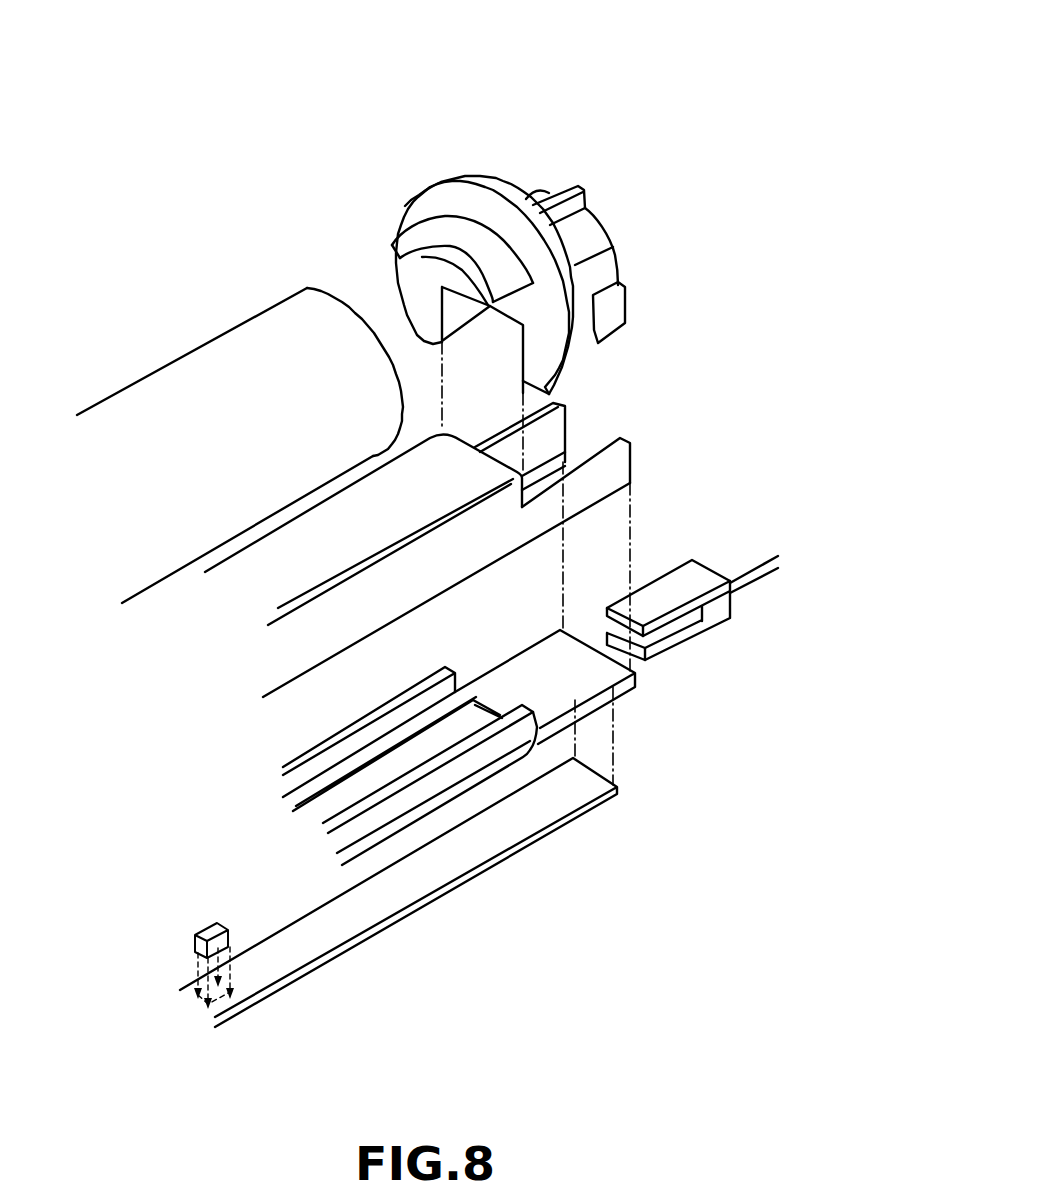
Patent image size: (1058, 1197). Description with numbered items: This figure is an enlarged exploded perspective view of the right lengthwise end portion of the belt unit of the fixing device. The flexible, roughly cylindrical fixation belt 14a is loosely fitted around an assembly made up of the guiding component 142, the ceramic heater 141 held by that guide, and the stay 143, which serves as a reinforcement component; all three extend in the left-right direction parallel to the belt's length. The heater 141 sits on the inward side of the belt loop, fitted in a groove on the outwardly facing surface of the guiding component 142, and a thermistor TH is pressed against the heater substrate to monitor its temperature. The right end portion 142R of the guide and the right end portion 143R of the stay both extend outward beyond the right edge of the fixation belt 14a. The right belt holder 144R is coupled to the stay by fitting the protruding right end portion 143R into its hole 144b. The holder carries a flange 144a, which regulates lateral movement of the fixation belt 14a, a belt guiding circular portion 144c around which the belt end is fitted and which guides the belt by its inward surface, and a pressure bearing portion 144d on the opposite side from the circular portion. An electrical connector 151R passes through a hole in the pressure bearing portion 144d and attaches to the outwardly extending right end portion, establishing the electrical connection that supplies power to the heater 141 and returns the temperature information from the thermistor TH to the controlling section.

The right belt holder 144R is at (530, 241).
The flange 144a is at (458, 186).
The hole 144b is at (484, 355).
The belt guiding circular portion 144c is at (448, 229).
The pressure bearing portion 144d is at (588, 228).
The fixation belt 14a is at (168, 538).
The stay 143 is at (509, 547).
The right end portion of the stay 143R is at (553, 413).
The guiding component 142 is at (323, 810).
The right end portion of the guiding component 142R is at (560, 675).
The electrical connector 151R is at (692, 578).
The ceramic heater 141 is at (447, 888).
The thermistor TH is at (197, 933).